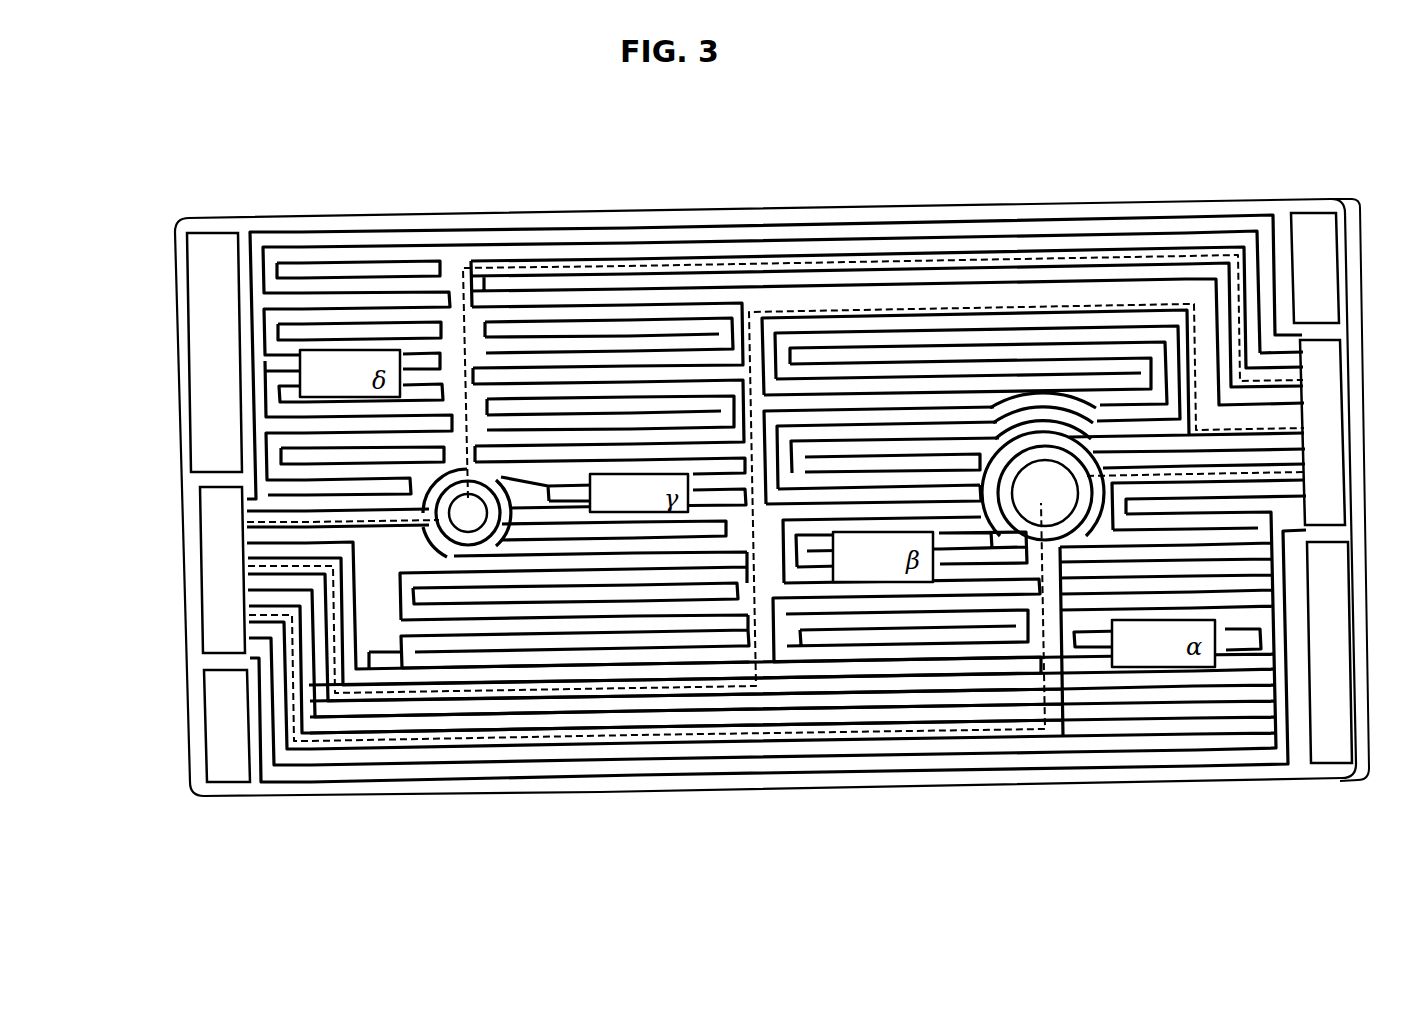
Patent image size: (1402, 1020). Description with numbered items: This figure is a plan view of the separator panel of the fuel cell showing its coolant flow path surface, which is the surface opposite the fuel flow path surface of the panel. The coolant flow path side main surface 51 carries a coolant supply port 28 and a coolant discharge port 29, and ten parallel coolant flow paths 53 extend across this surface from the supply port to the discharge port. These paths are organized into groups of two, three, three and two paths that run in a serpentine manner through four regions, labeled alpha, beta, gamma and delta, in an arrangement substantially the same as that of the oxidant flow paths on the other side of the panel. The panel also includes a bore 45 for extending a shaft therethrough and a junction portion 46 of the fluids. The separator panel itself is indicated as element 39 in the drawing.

The coolant supply port 28 is at (222, 570).
The coolant discharge port 29 is at (1322, 432).
The heater substrate 39 is at (487, 797).
The bore for extending a shaft therethrough 45 is at (467, 513).
The junction portion of the fluids 46 is at (1043, 486).
The coolant flow path side main surface 51 is at (752, 791).
The parallel coolant flow paths 53 is at (202, 558).